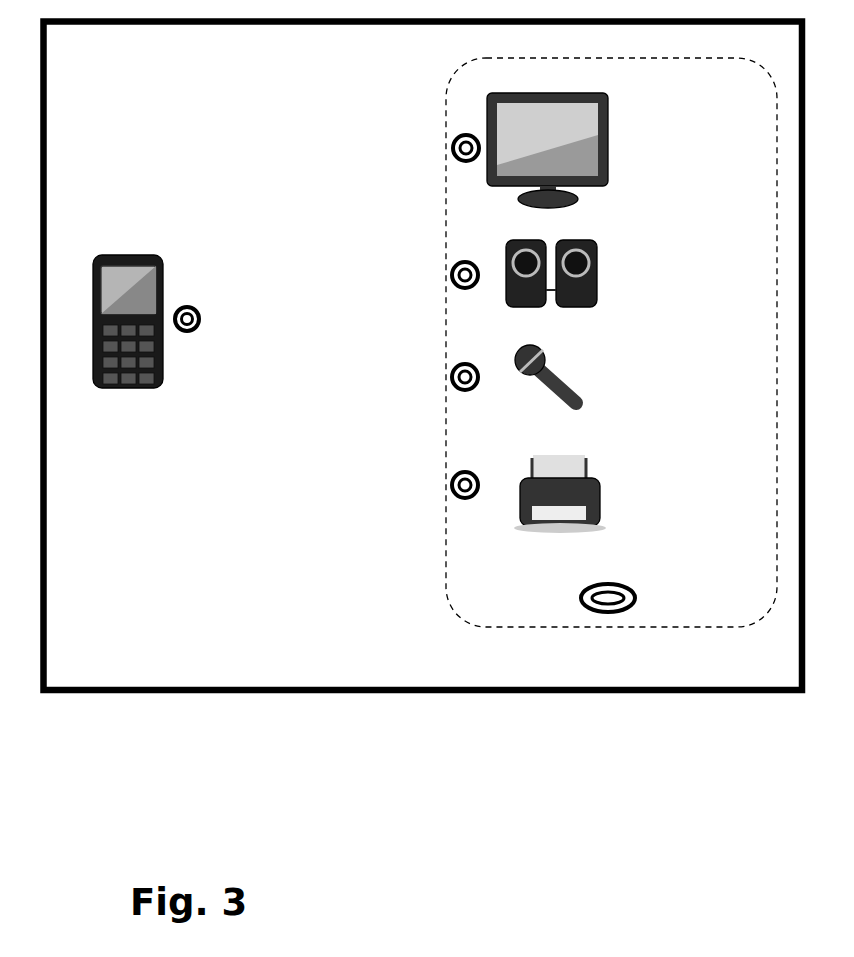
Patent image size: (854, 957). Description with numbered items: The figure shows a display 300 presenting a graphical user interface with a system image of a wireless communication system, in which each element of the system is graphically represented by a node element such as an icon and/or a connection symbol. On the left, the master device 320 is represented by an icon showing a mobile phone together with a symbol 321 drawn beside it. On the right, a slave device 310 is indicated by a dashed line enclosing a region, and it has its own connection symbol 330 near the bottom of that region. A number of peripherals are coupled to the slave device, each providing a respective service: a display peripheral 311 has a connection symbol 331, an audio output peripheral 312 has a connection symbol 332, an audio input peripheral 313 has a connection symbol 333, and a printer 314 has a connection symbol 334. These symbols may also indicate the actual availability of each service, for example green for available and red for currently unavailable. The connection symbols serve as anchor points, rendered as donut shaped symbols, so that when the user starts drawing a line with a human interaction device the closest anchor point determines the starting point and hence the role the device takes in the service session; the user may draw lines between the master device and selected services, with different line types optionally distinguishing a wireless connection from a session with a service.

The display 300 is at (478, 693).
The slave device 310 is at (448, 597).
The display peripheral 311 is at (614, 140).
The audio output peripheral 312 is at (598, 276).
The audio input peripheral 313 is at (578, 374).
The printer 314 is at (613, 498).
The master device 320 is at (134, 255).
The symbol 321 is at (201, 318).
The connection symbol 330 is at (610, 612).
The connection symbol 331 is at (453, 148).
The connection symbol 332 is at (452, 275).
The connection symbol 333 is at (452, 377).
The connection symbol 334 is at (452, 485).